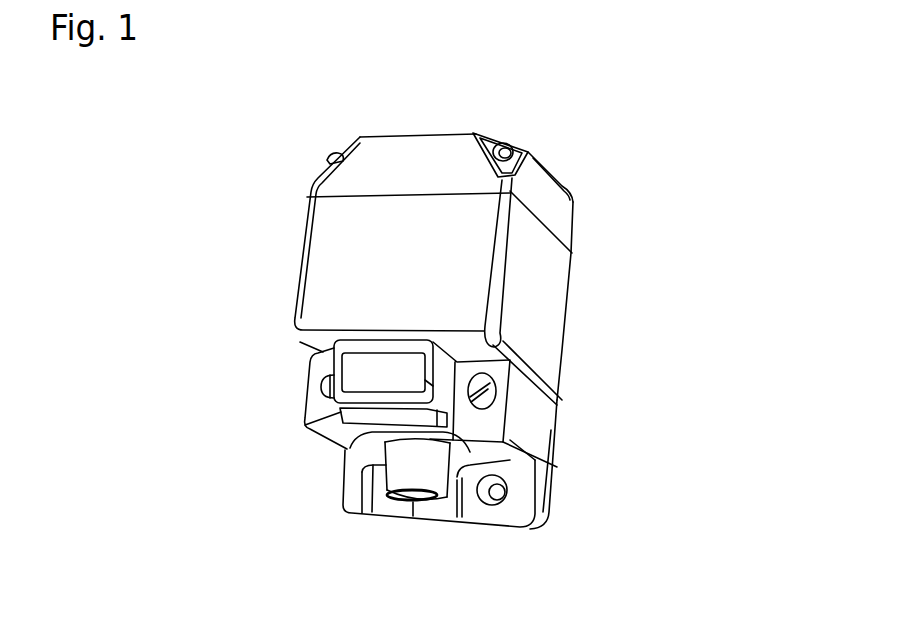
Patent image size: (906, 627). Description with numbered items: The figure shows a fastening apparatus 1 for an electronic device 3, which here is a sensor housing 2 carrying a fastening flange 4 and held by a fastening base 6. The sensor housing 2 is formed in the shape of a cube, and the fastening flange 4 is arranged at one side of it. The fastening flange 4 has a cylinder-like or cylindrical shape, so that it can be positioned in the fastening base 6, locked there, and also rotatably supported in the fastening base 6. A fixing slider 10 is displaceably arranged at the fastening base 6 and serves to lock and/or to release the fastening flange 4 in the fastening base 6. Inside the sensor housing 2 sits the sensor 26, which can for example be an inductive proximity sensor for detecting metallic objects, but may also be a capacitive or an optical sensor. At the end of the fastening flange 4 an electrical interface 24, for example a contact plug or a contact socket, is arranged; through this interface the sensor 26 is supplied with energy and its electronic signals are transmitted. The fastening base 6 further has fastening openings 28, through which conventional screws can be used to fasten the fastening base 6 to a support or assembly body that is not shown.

The fastening apparatus 1 is at (652, 413).
The sensor housing 2 is at (560, 287).
The electronic device 3 is at (623, 146).
The fastening flange 4 is at (510, 437).
The fastening base 6 is at (527, 422).
The fixing slider 10 is at (340, 413).
The electrical interface 24 is at (410, 460).
The sensor 26 is at (634, 90).
The fastening openings 28 is at (493, 382).